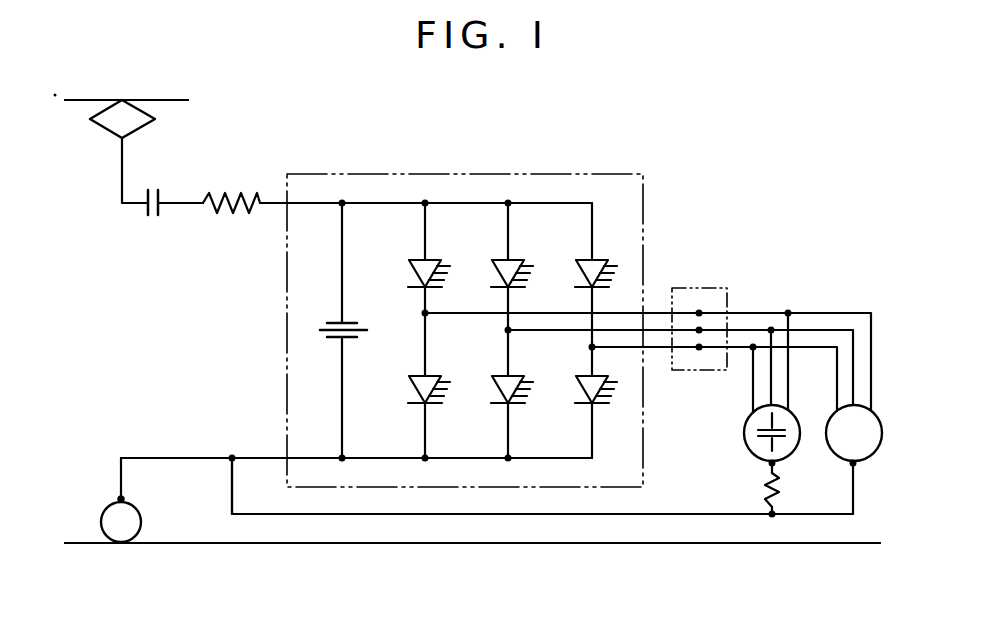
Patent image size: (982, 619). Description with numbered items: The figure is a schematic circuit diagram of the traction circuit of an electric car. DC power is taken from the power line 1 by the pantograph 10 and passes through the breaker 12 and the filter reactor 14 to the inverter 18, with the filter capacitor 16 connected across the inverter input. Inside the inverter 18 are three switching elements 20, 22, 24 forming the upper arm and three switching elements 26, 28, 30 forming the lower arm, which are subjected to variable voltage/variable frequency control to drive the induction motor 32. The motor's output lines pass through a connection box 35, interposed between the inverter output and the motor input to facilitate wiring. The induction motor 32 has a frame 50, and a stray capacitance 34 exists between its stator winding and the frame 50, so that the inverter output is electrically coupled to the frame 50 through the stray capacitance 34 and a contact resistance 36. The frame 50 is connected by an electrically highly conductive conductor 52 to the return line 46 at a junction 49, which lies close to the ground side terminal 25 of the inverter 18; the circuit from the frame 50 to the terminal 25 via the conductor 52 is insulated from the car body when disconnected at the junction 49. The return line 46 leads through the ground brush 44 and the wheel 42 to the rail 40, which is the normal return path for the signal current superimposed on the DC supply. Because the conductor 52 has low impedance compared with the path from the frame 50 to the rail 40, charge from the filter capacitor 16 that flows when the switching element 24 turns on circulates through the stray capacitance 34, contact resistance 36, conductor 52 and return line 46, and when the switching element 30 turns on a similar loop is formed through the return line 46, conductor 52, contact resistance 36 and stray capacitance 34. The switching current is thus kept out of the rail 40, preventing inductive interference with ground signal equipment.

The power line 1 is at (85, 99).
The pantograph 10 is at (110, 130).
The breaker 12 is at (152, 218).
The filter reactor 14 is at (235, 195).
The filter capacitor 16 is at (325, 322).
The inverter 18 is at (510, 174).
The switching element 20 is at (416, 257).
The switching element 22 is at (499, 257).
The switching element 24 is at (581, 257).
The ground side terminal 25 is at (340, 456).
The switching element 26 is at (413, 393).
The switching element 28 is at (496, 393).
The switching element 30 is at (579, 393).
The induction motor 32 is at (872, 455).
The stray capacitance 34 is at (744, 433).
The connection box 35 is at (710, 286).
The contact resistance 36 is at (766, 488).
The rail 40 is at (377, 545).
The wheel 42 is at (141, 521).
The ground brush 44 is at (118, 496).
The return line 46 is at (146, 456).
The junction 49 is at (232, 455).
The frame 50 is at (812, 516).
The conductor 52 is at (648, 516).